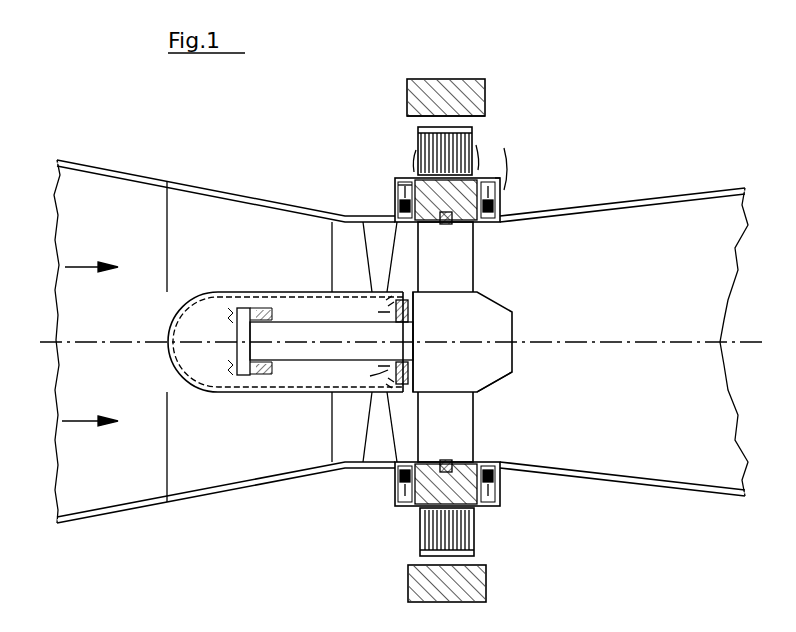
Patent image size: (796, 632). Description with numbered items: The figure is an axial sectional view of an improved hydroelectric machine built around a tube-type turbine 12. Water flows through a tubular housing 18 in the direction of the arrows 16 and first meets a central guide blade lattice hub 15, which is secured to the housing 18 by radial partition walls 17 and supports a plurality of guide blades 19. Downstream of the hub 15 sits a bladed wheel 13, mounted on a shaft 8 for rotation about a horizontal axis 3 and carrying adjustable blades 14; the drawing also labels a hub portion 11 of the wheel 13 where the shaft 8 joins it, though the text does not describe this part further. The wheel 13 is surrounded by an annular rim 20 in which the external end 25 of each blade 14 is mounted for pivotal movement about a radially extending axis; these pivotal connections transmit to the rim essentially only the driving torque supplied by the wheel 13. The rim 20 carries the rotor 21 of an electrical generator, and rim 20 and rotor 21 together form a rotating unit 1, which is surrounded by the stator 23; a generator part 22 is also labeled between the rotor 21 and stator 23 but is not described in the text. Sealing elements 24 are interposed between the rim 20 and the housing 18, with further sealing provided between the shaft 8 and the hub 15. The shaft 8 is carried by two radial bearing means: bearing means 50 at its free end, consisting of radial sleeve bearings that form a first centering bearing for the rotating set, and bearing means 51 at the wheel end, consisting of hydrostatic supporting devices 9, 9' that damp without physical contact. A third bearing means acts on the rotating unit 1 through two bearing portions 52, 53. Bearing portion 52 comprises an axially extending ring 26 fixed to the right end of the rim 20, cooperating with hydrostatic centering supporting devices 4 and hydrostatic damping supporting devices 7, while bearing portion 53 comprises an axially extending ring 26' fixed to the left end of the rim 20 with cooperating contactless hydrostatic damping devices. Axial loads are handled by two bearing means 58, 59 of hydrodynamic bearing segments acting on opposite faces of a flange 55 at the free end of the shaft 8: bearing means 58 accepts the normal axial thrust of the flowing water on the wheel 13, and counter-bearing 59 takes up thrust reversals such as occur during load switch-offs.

The rotating unit 1 is at (508, 150).
The horizontal axis 3 is at (540, 340).
The hydrostatic centering supporting devices 4 is at (502, 190).
The hydrostatic damping supporting devices 7 is at (494, 492).
The shaft 8 is at (304, 350).
The hydrostatic supporting device 9 is at (379, 310).
The hydrostatic supporting device 9' is at (393, 364).
The hub shaft 11 is at (412, 335).
The tube-type turbine 12 is at (512, 288).
The bladed wheel 13 is at (485, 380).
The adjustable blades 14 is at (468, 270).
The guide blade lattice hub 15 is at (185, 358).
The arrows 16 is at (88, 268).
The radial partition walls 17 is at (167, 238).
The tubular housing 18 is at (186, 496).
The guide blades 19 is at (380, 250).
The rim 20 is at (396, 205).
The rotor 21 is at (426, 142).
The stator 22 is at (408, 118).
The stator 23 is at (466, 84).
The sealing elements 24 is at (495, 212).
The external end 25 is at (446, 225).
The axially extending ring 26 is at (488, 151).
The axially extending ring 26' is at (402, 155).
The bearing means 50 is at (268, 306).
The bearing means 51 is at (372, 374).
The bearing portion 52 is at (506, 180).
The bearing portion 53 is at (398, 186).
The flange 55 is at (240, 308).
The bearing means 58 is at (266, 376).
The counter-bearing 59 is at (232, 372).